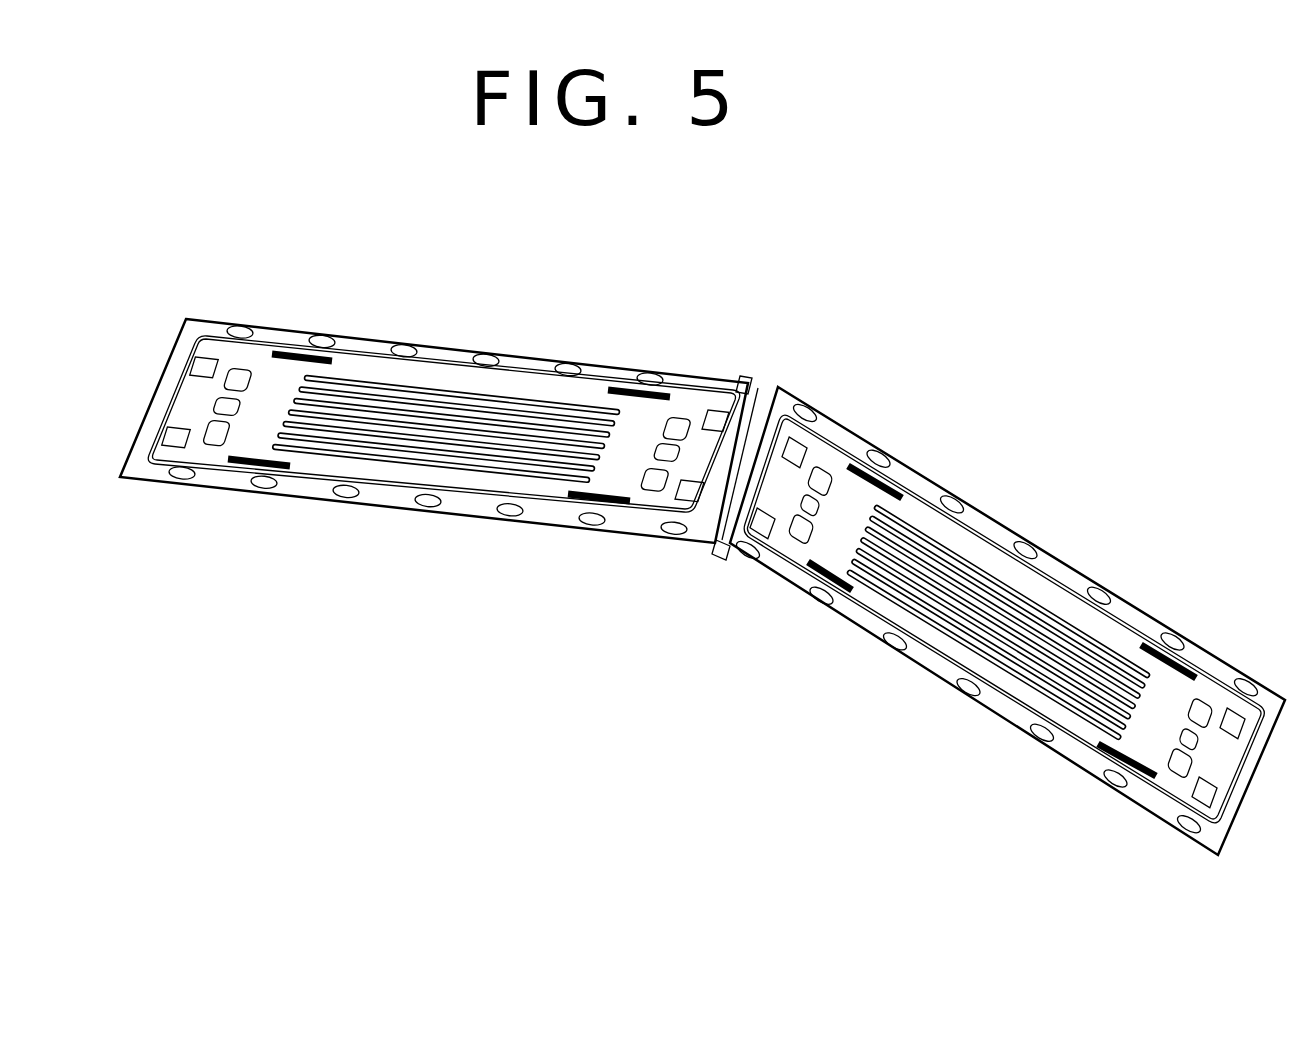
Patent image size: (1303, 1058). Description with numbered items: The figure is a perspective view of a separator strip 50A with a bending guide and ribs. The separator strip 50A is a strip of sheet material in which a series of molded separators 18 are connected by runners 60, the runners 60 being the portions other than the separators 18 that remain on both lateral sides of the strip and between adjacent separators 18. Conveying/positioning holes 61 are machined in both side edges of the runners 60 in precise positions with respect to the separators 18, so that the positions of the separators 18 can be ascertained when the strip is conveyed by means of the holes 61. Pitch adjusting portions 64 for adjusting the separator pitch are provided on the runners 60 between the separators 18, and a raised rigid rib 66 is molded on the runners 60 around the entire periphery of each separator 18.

The separator strip 50A is at (265, 493).
The raised rigid rib 66 is at (173, 363).
The pitch adjusting portion 64 is at (735, 385).
The runner 60 is at (535, 368).
The conveying/positioning hole 61 is at (403, 347).
The separator 18 is at (430, 398).